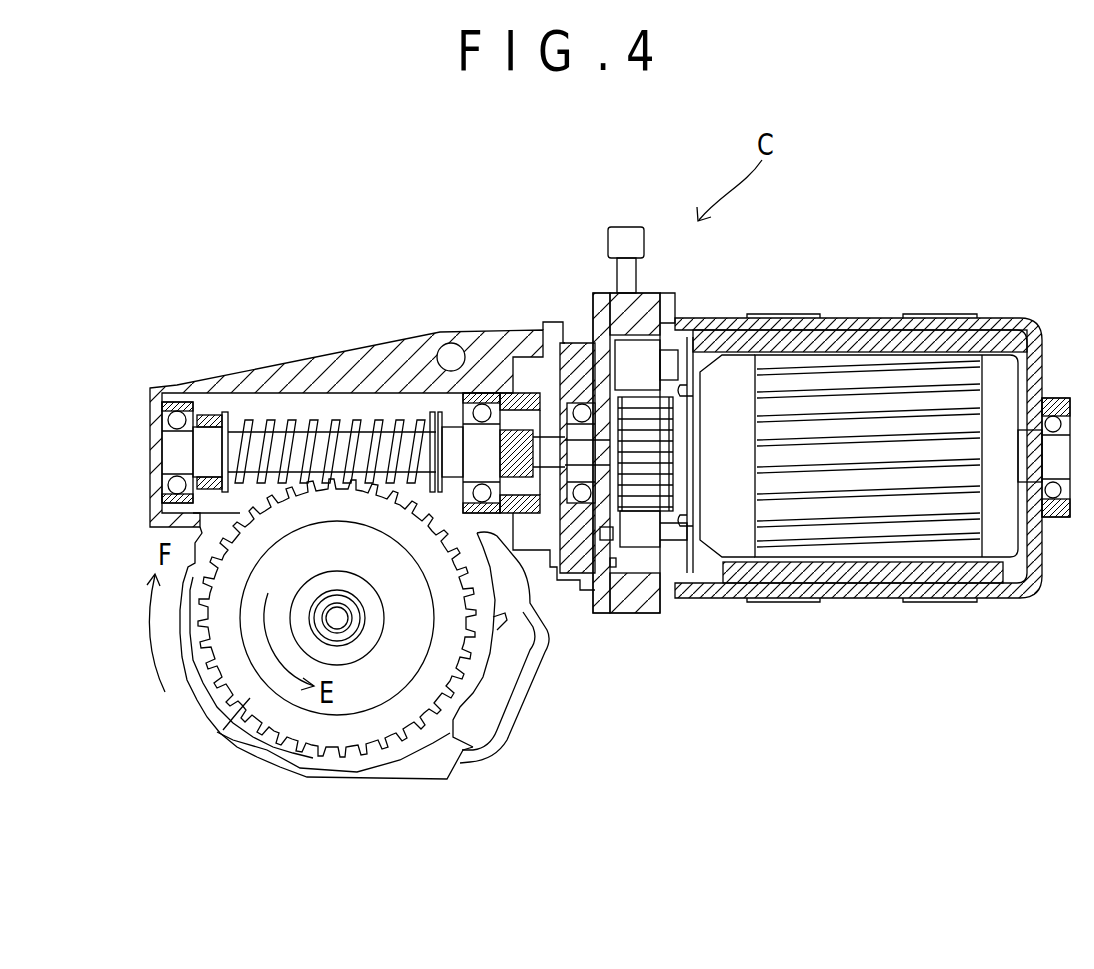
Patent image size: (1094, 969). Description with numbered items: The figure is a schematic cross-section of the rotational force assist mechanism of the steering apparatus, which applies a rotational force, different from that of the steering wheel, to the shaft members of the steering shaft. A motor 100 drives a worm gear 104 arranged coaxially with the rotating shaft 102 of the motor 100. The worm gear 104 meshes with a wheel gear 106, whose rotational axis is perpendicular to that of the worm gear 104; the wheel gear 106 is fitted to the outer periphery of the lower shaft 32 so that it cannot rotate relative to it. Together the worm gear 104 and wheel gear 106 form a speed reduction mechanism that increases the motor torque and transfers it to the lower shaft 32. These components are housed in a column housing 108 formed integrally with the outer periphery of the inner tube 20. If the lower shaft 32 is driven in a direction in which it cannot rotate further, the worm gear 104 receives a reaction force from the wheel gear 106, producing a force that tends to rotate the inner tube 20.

The inner tube 20 is at (280, 760).
The lower shaft 32 is at (360, 643).
The motor 100 is at (789, 349).
The rotating shaft 102 is at (647, 483).
The worm gear 104 is at (295, 410).
The wheel gear 106 is at (223, 725).
The column housing 108 is at (417, 345).